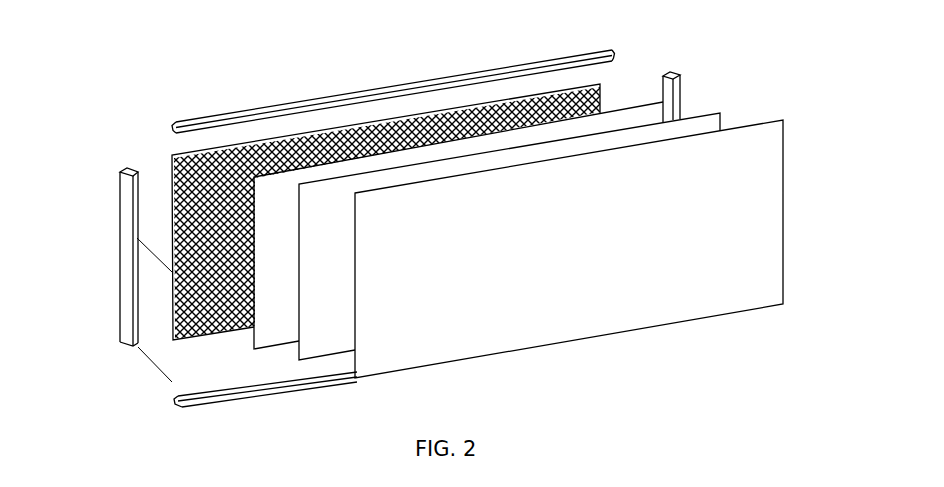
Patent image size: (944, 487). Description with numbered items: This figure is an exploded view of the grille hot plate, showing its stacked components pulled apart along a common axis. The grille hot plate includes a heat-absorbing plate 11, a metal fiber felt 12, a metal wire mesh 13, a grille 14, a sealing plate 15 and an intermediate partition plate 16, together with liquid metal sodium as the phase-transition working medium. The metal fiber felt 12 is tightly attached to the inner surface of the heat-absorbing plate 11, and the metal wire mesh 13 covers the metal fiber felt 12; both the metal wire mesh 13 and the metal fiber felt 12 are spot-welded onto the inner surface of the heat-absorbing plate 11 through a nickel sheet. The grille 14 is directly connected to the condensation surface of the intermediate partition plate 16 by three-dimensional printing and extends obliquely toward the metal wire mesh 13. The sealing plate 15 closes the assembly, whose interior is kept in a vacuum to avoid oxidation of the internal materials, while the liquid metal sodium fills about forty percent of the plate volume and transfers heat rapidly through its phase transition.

The heat-absorbing plate 11 is at (721, 172).
The metal fiber felt 12 is at (700, 129).
The metal wire mesh 13 is at (650, 110).
The grille 14 is at (160, 240).
The sealing plate 15 is at (124, 321).
The intermediate partition plate 16 is at (595, 84).